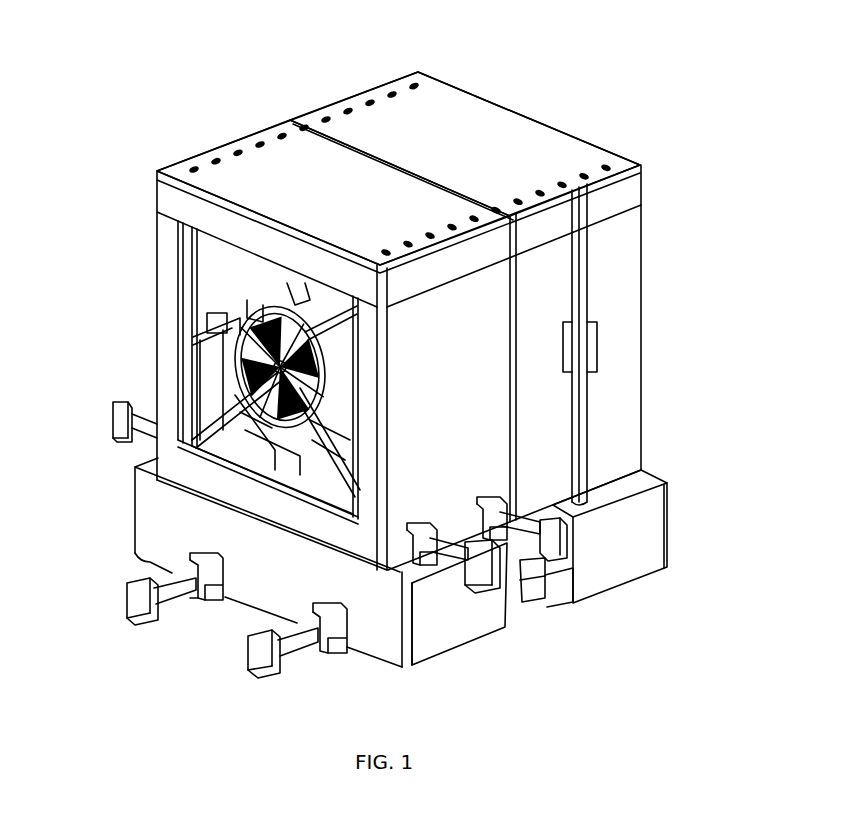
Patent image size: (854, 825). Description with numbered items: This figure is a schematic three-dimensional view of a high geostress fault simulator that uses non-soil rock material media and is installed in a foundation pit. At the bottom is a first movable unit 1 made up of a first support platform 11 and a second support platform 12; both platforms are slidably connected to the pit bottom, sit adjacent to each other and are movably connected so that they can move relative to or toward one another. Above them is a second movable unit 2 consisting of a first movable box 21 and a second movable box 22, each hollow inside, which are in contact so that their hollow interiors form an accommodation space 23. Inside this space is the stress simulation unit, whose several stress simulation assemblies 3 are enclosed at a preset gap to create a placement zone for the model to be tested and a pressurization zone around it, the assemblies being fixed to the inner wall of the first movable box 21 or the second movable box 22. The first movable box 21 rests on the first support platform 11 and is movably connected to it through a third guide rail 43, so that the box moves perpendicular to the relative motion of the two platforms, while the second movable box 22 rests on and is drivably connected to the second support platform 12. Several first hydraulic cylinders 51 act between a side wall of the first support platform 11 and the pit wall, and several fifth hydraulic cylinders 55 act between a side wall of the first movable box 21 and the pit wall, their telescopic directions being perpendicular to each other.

The first movable unit 1 is at (443, 591).
The first support platform 11 is at (465, 620).
The second support platform 12 is at (607, 552).
The second movable unit 2 is at (399, 289).
The first movable box 21 is at (270, 173).
The second movable box 22 is at (457, 127).
The accommodation space 23 is at (222, 282).
The stress simulation assemblies 3 is at (338, 354).
The third guide rail 43 is at (592, 400).
The first hydraulic cylinders 51 is at (168, 590).
The fifth hydraulic cylinders 55 is at (557, 546).